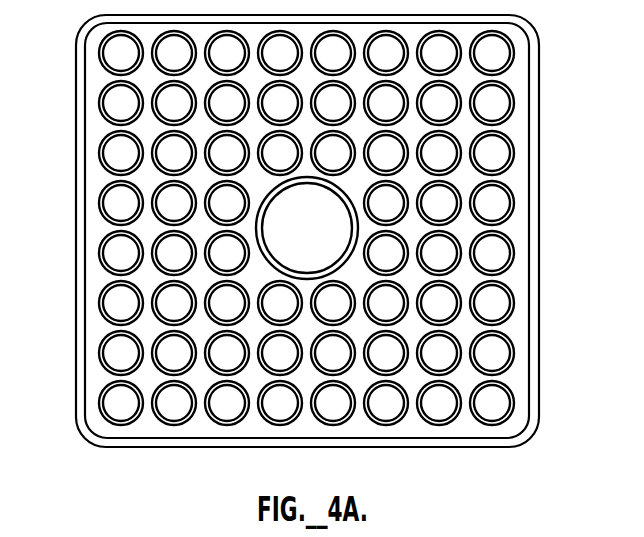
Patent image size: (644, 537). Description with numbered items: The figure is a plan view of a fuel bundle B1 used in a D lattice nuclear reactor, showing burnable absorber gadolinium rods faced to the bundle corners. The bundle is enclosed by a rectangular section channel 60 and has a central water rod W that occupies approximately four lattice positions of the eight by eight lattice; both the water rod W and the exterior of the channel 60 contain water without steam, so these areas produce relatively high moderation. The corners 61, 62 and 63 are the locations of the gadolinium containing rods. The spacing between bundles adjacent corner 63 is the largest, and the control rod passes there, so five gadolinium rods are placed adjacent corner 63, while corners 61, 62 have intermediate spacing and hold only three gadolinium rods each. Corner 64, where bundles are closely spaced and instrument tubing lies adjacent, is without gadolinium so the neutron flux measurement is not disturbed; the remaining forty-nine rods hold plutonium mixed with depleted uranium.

The channel 60 is at (245, 449).
The corner 61 is at (83, 433).
The corner 62 is at (530, 27).
The corner 63 is at (83, 25).
The corner 64 is at (512, 447).
The fuel bundle B1 is at (74, 349).
The water rod W is at (340, 192).